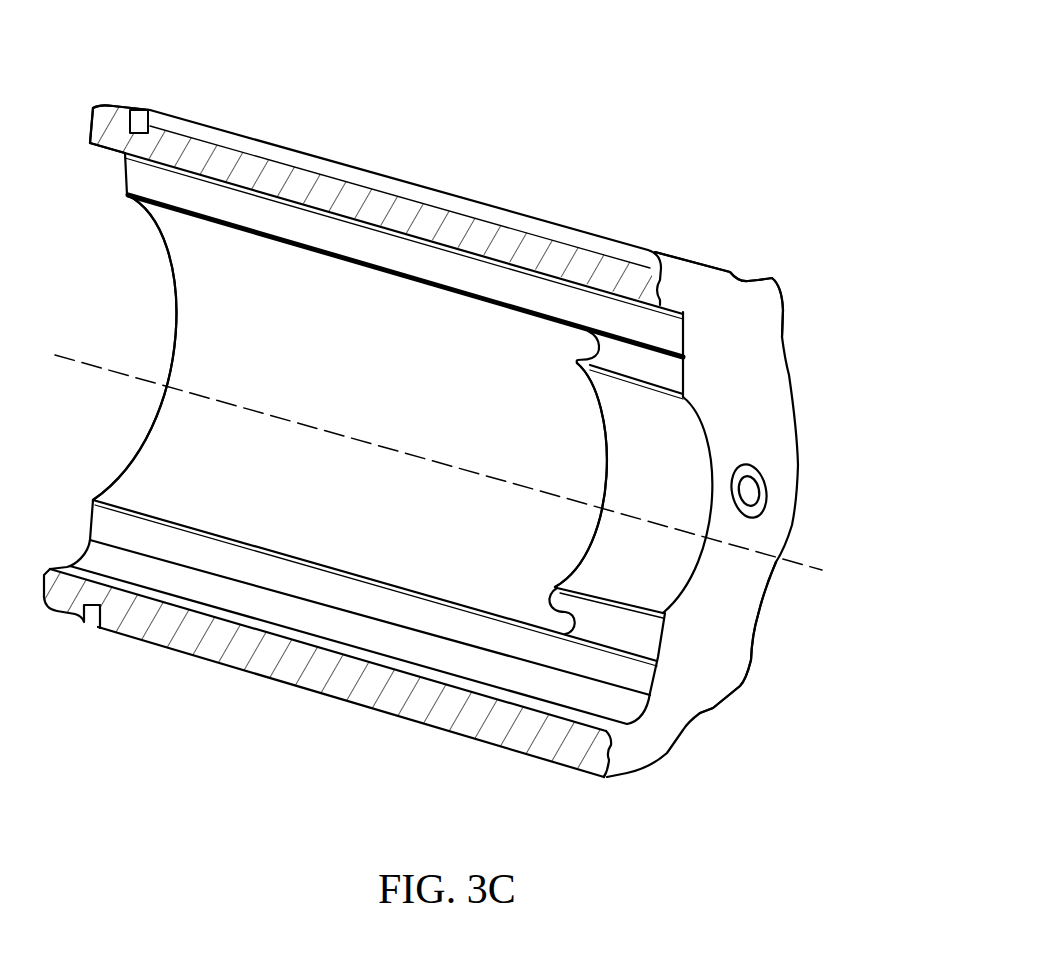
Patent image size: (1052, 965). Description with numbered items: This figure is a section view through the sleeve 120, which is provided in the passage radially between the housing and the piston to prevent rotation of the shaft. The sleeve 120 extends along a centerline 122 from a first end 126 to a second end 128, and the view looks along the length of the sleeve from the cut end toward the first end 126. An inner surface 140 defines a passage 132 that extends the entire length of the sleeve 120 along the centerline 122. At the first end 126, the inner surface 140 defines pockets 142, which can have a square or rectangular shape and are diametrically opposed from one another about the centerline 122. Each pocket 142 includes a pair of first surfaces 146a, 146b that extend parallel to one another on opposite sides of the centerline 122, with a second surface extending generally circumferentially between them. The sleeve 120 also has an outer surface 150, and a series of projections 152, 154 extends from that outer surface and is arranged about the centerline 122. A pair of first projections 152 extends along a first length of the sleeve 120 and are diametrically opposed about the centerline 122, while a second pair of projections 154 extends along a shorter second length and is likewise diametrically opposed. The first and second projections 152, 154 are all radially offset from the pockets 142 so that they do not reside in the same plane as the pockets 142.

The sleeve 120 is at (480, 170).
The centerline 122 is at (808, 566).
The first end 126 is at (778, 247).
The second end 128 is at (125, 72).
The passage 132 is at (173, 282).
The inner surface 140 is at (412, 428).
The pockets 142 is at (676, 376).
The first surface 146a is at (617, 675).
The first surface 146b is at (672, 343).
The outer surface 150 is at (617, 778).
The first projections 152 is at (733, 670).
The second projections 154 is at (768, 300).